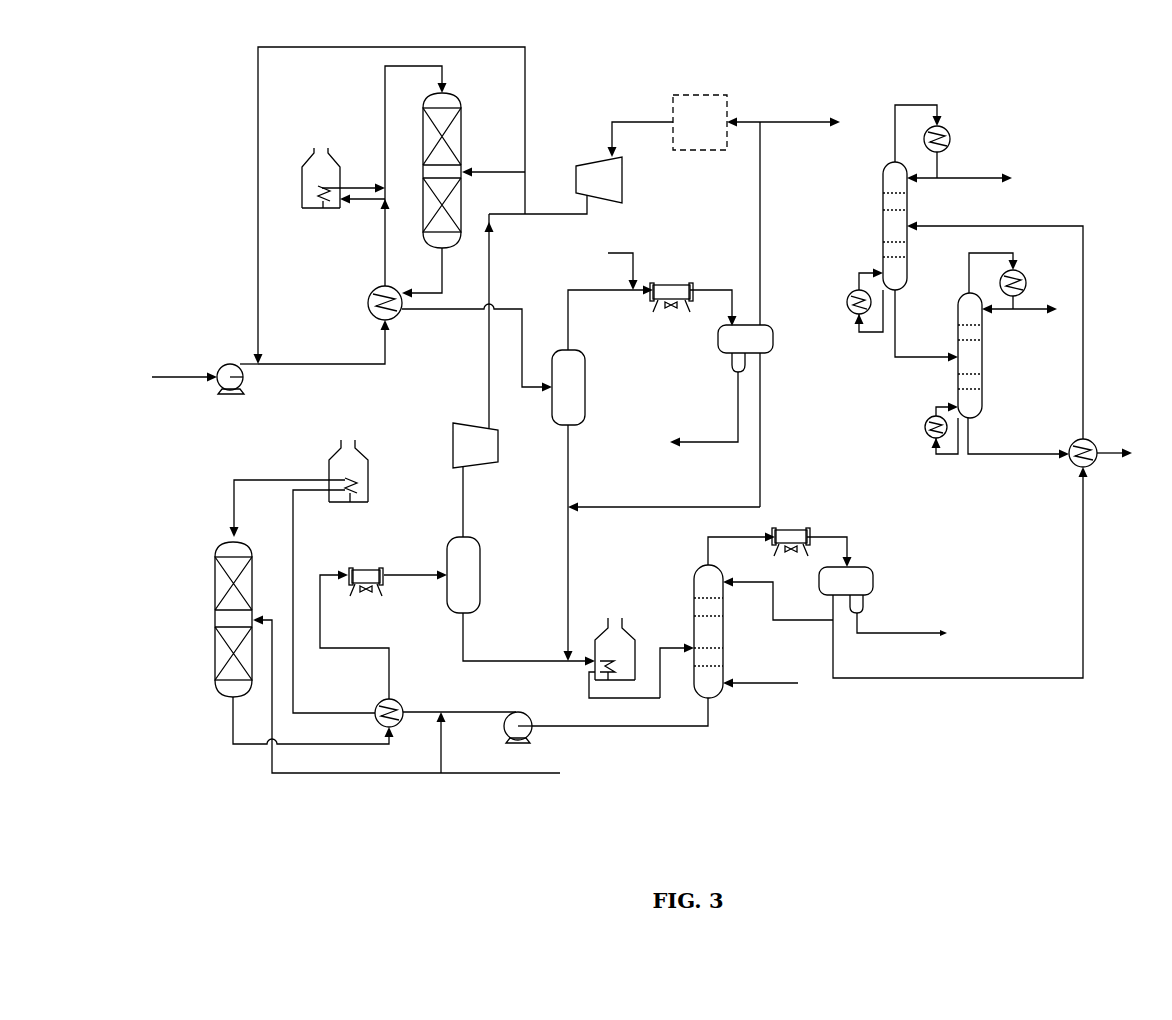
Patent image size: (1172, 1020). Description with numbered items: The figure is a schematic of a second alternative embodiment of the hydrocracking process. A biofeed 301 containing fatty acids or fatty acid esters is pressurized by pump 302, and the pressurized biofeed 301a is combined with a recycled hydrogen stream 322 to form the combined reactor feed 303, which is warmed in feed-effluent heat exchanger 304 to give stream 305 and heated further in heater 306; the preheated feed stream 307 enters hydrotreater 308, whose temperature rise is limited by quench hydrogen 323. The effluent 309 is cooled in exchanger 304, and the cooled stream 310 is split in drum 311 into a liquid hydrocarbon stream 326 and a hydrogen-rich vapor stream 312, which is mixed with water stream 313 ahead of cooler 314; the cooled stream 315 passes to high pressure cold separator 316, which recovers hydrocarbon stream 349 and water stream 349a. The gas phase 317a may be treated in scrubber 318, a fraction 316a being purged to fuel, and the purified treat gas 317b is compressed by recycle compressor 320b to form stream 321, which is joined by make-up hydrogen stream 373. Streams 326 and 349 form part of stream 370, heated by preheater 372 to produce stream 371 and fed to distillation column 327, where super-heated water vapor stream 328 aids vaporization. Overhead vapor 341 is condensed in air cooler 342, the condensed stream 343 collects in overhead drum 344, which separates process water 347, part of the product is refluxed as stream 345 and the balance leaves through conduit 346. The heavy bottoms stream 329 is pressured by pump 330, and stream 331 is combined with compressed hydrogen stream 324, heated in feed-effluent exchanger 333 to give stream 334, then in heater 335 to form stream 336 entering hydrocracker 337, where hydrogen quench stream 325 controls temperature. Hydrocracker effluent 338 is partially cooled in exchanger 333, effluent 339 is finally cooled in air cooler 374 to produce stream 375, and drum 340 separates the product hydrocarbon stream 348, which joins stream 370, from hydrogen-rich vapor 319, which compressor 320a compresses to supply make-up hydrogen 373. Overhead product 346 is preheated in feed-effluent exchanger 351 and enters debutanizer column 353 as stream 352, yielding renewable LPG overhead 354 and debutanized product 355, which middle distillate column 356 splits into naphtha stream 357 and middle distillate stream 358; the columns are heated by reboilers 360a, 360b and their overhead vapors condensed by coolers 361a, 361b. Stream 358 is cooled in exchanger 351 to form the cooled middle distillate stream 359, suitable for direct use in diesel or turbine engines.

The biofeed 301 is at (162, 376).
The pressurized biofeed 301a is at (244, 362).
The pump 302 is at (250, 385).
The combined reactor feed 303 is at (290, 362).
The feed-effluent heat exchanger 304 is at (368, 300).
The heated feed stream 305 is at (383, 228).
The heater 306 is at (333, 158).
The preheated feed stream 307 is at (384, 95).
The hydrotreater 308 is at (455, 95).
The effluent 309 is at (441, 278).
The cooled stream 310 is at (432, 311).
The drum 311 is at (585, 390).
The vapor stream 312 is at (590, 292).
The water stream 313 is at (633, 258).
The cooler 314 is at (678, 284).
The cooled hydrogen-rich vapor stream 315 is at (708, 290).
The high pressure cold separator 316 is at (718, 350).
The purge stream 316a is at (810, 121).
The gas phase 317a is at (759, 168).
The purified treat gas 317b is at (627, 121).
The scrubber 318 is at (727, 93).
The hydrogen-rich vapor stream 319 is at (463, 500).
The compressor 320a is at (466, 424).
The recycle compressor 320b is at (624, 170).
The compressed treat gas stream 321 is at (572, 214).
The recycled hydrogen stream 322 is at (256, 208).
The quench hydrogen 323 is at (487, 171).
The compressed hydrogen stream 324 is at (505, 772).
The hydrogen quench stream 325 is at (270, 755).
The liquid hydrocarbon stream 326 is at (566, 490).
The distillation column 327 is at (724, 638).
The super-heated water vapor stream 328 is at (770, 686).
The heavy fraction bottoms stream 329 is at (700, 728).
The pump 330 is at (534, 742).
The pumped heavy fraction stream 331 is at (470, 711).
The feed-effluent exchanger 333 is at (378, 702).
The heated stream 334 is at (294, 562).
The heater 335 is at (333, 455).
The hydrocracker feed stream 336 is at (245, 479).
The hydrocracker 337 is at (215, 692).
The effluent 338 is at (318, 744).
The effluent 339 is at (322, 632).
The drum 340 is at (481, 592).
The overhead vapor stream 341 is at (731, 538).
The air cooler 342 is at (798, 529).
The condensed overhead vapor stream 343 is at (849, 553).
The overhead drum 344 is at (875, 580).
The reflux stream 345 is at (775, 612).
The conduit 346 is at (960, 677).
The process water 347 is at (900, 632).
The hydrocracker product hydrocarbon stream 348 is at (545, 660).
The hydrocarbon stream 349 is at (620, 508).
The water stream 349a is at (710, 441).
The feed-effluent exchanger 351 is at (1075, 440).
The product feed line to column 352 is at (1025, 224).
The debutanizer column 353 is at (882, 178).
The debutanizer overhead product stream 354 is at (970, 178).
The debutanized product stream 355 is at (915, 358).
The middle distillate column 356 is at (983, 362).
The naphtha stream 357 is at (1032, 312).
The middle distillate stream 358 is at (1004, 455).
The cooled middle distillate stream 359 is at (1112, 450).
The reboiler 360a is at (850, 312).
The reboiler 360b is at (926, 436).
The cooler 361a is at (948, 130).
The cooler 361b is at (1026, 283).
The column feed stream 370 is at (578, 666).
The preheated column feed stream 371 is at (662, 640).
The preheater 372 is at (604, 627).
The make-up hydrogen stream 373 is at (490, 277).
The air cooler 374 is at (368, 568).
The cooled effluent stream 375 is at (398, 572).